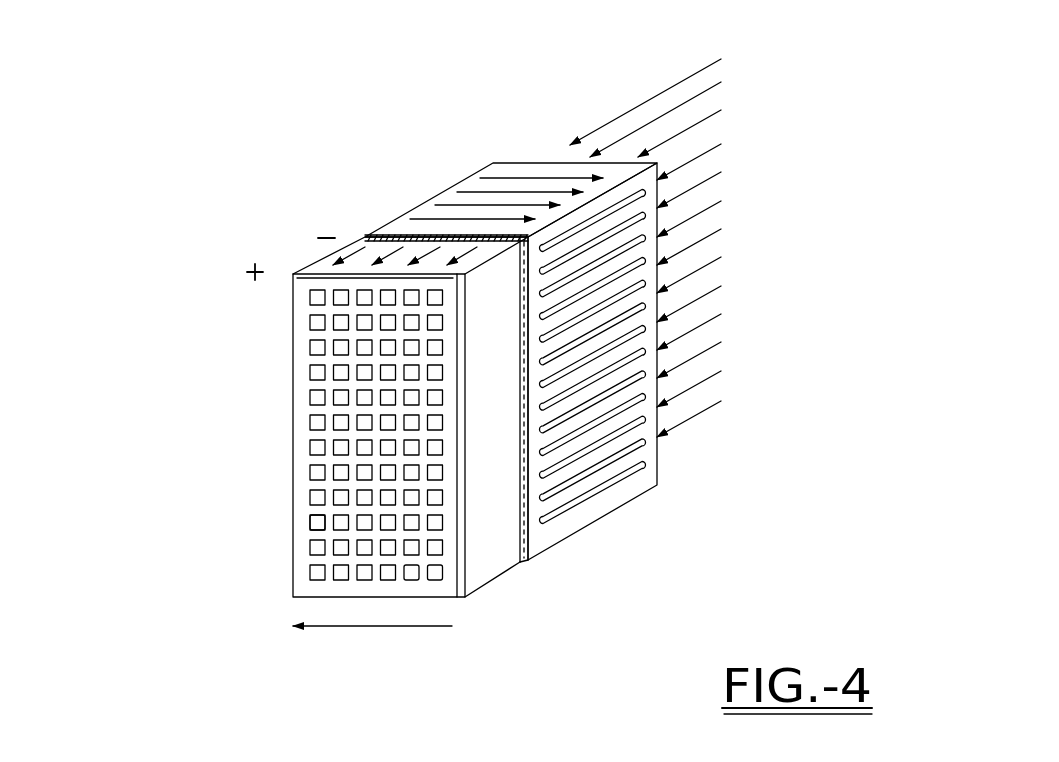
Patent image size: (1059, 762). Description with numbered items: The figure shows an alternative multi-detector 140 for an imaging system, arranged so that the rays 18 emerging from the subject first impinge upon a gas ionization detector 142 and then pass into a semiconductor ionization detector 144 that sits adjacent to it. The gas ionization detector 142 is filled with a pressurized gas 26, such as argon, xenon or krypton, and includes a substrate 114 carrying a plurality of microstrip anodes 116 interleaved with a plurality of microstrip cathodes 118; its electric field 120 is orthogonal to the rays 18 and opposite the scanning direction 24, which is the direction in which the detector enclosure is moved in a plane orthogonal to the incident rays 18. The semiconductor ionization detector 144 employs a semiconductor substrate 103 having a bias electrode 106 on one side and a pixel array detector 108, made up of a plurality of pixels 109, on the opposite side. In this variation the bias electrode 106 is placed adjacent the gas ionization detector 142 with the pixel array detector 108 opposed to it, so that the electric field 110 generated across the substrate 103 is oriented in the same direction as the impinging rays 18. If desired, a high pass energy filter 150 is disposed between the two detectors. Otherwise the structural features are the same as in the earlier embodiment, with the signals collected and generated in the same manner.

The rays 18 is at (647, 100).
The scanning direction 24 is at (385, 627).
The pressurized gas 26 is at (452, 202).
The semiconductor substrate 103 is at (297, 468).
The bias electrode 106 is at (388, 232).
The pixel array detector 108 is at (308, 528).
The pixels 109 is at (432, 576).
The electric field 110 is at (318, 250).
The substrate 114 is at (587, 510).
The microstrip anodes 116 is at (636, 461).
The microstrip cathodes 118 is at (628, 477).
The electric field 120 is at (523, 178).
The multi-detector 140 is at (248, 152).
The gas ionization detector 142 is at (422, 200).
The semiconductor ionization detector 144 is at (292, 340).
The high pass energy filter 150 is at (521, 556).